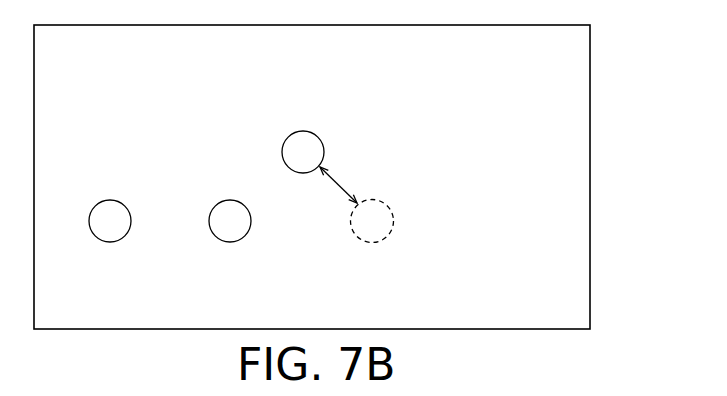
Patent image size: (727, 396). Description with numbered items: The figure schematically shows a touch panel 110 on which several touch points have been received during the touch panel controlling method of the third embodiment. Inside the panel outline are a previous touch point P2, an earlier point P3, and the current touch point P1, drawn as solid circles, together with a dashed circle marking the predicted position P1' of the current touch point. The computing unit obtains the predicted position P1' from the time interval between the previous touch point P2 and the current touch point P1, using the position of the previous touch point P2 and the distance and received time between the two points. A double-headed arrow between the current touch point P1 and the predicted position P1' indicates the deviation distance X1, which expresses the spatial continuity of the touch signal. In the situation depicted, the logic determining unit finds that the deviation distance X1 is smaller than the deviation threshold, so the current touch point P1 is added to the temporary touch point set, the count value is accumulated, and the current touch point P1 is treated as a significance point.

The touch panel 110 is at (590, 68).
The current touch point P1 is at (302, 169).
The predicted position P1' is at (371, 239).
The previous touch point P2 is at (214, 238).
The third touch point P3 is at (94, 238).
The deviation distance X1 is at (344, 177).